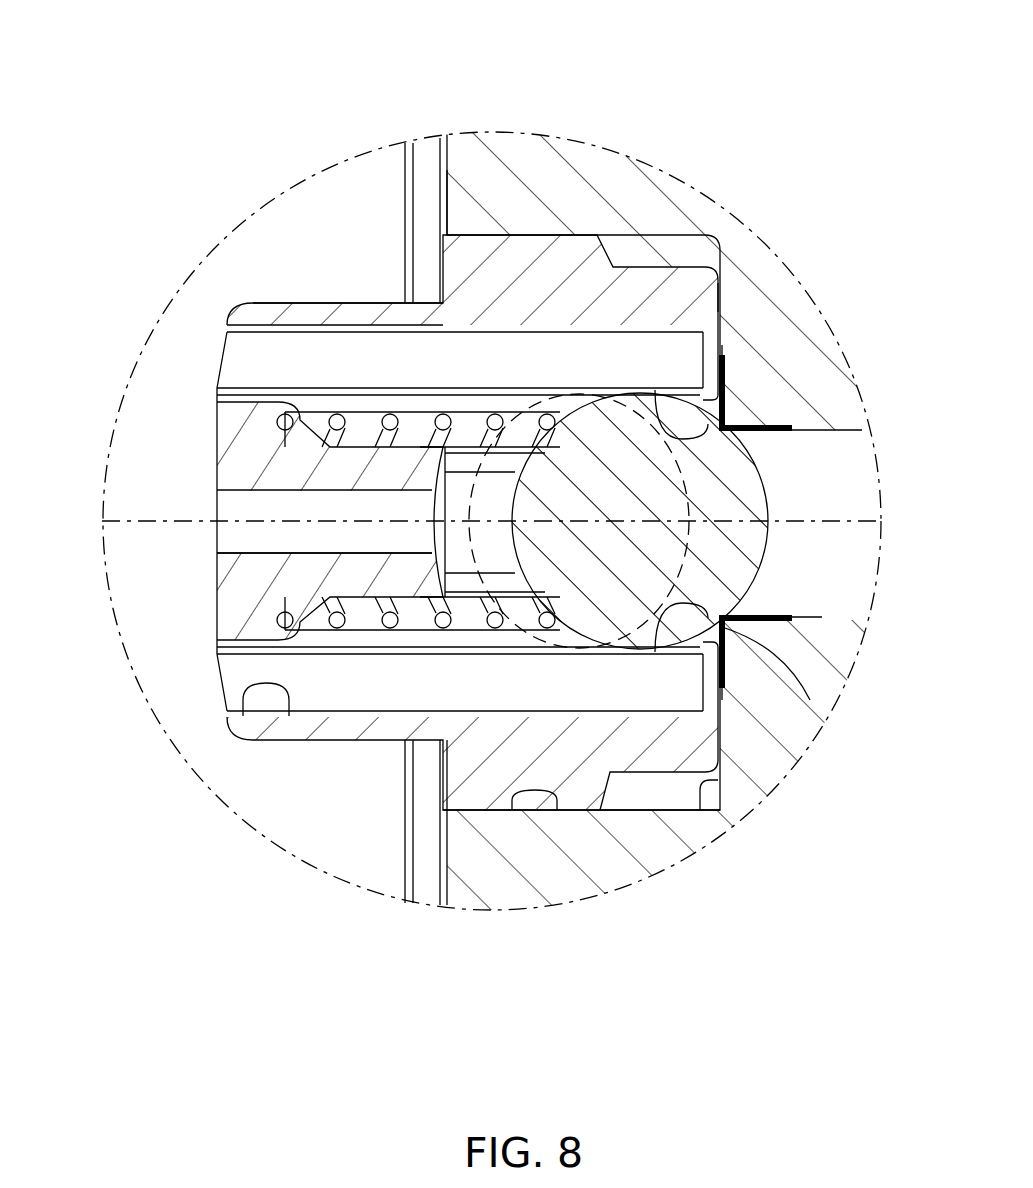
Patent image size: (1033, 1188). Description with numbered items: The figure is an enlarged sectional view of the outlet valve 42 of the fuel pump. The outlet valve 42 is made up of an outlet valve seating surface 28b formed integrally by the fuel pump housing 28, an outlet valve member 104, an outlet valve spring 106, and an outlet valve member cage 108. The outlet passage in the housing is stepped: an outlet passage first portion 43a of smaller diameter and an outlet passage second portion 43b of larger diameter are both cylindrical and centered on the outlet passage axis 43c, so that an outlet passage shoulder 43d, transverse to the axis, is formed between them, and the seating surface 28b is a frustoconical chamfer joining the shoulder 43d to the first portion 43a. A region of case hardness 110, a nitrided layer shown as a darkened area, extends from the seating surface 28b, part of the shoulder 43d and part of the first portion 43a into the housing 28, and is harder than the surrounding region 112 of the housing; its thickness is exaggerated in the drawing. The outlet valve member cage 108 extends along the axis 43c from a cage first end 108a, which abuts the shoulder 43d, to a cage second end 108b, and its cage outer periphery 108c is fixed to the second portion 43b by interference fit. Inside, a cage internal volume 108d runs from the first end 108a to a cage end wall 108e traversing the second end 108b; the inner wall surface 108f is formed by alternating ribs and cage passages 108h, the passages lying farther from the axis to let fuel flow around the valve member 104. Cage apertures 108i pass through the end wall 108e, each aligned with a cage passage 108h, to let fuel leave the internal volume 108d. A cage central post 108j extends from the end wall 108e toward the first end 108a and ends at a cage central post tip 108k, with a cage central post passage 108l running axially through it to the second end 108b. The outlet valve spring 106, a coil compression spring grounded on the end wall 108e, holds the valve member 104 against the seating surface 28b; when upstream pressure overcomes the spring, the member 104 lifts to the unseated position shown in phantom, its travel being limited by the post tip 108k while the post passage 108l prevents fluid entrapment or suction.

The fuel pump housing 28 is at (737, 240).
The outlet valve seating surface 28b is at (657, 640).
The outlet valve 42 is at (227, 285).
The outlet passage first portion 43a is at (822, 616).
The outlet passage second portion 43b is at (514, 812).
The outlet passage axis 43c is at (118, 523).
The outlet passage shoulder 43d is at (698, 782).
The outlet valve member 104 is at (735, 467).
The outlet valve spring 106 is at (337, 414).
The outlet valve member cage 108 is at (598, 252).
The cage first end 108a is at (722, 300).
The cage second end 108b is at (215, 602).
The cage outer periphery 108c is at (518, 290).
The cage internal volume 108d is at (360, 420).
The cage end wall 108e is at (233, 423).
The inner wall surface 108f is at (258, 690).
The cage passages 108h is at (398, 358).
The cage apertures 108i is at (233, 357).
The cage central post 108j is at (333, 580).
The cage central post tip 108k is at (473, 410).
The cage central post passage 108l is at (233, 503).
The region of case hardness 110 is at (733, 410).
The surrounding region 112 is at (740, 385).